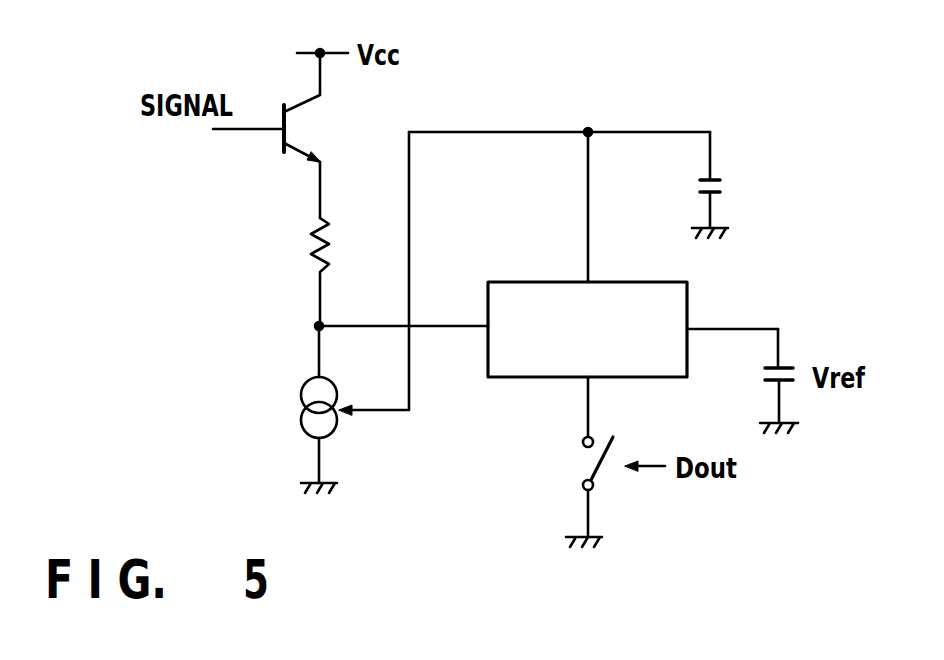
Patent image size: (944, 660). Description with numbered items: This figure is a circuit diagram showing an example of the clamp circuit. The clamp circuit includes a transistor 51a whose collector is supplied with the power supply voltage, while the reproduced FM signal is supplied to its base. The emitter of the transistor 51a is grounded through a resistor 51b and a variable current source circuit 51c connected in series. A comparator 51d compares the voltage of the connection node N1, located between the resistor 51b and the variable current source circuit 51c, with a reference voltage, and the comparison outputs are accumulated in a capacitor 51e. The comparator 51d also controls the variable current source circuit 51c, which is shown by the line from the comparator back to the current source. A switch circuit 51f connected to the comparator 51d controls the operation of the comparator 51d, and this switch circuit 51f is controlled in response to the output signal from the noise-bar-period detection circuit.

The transistor 51a is at (288, 148).
The resistor 51b is at (309, 250).
The variable current source circuit 51c is at (301, 412).
The comparator 51d is at (547, 282).
The capacitor 51e is at (727, 191).
The switch circuit 51f is at (583, 466).
The connection node N1 is at (316, 326).